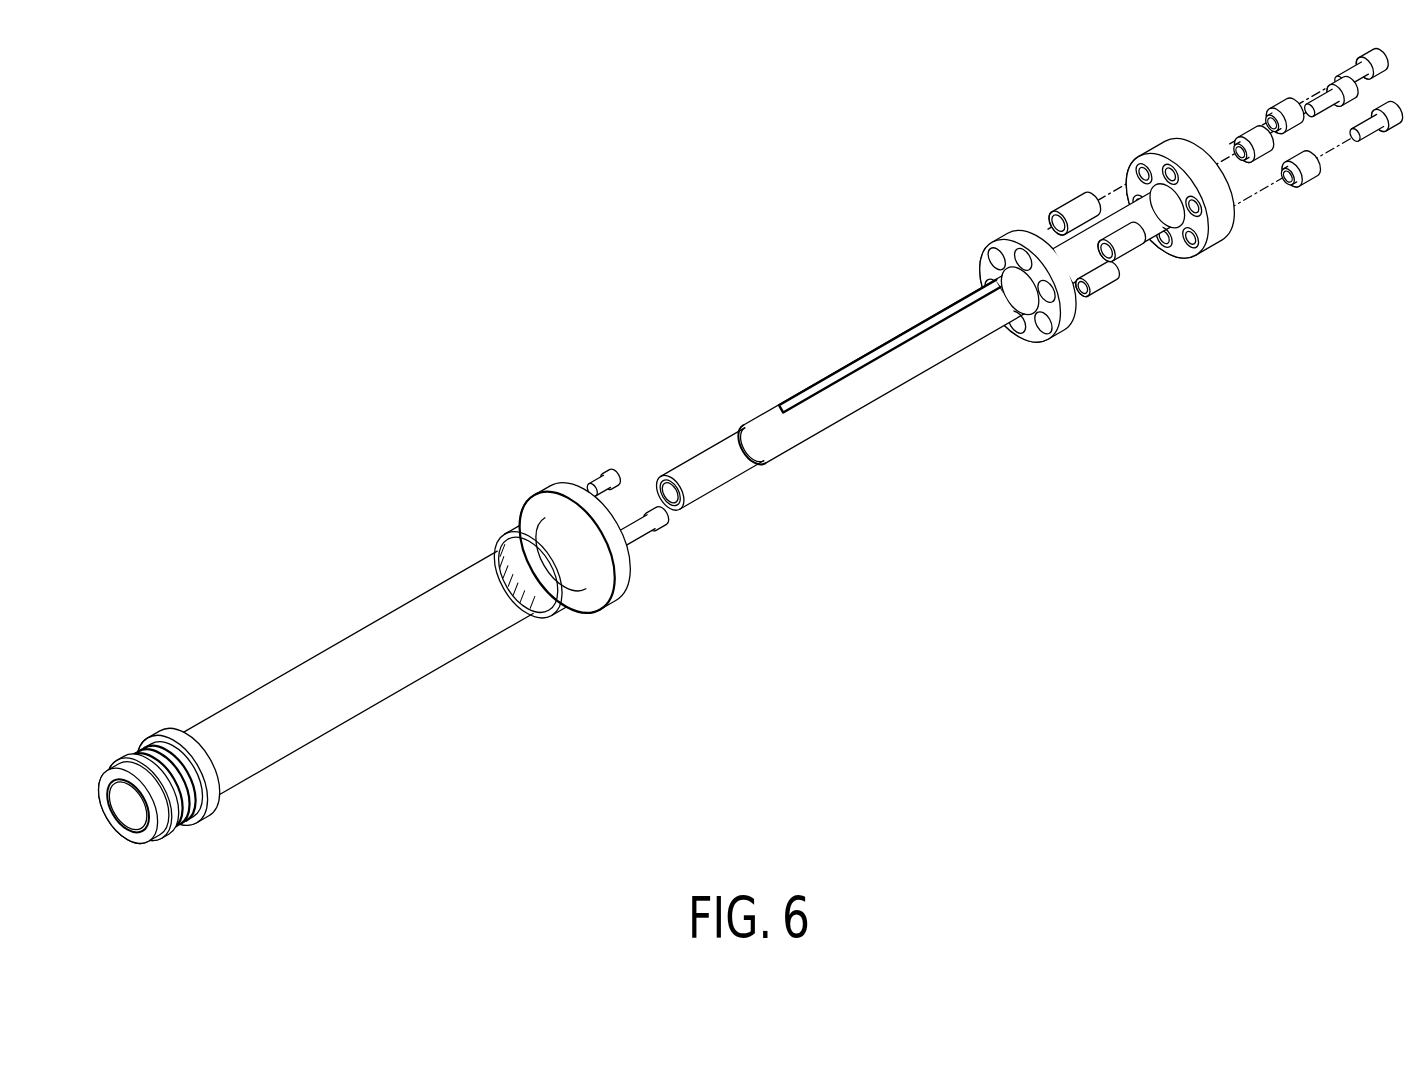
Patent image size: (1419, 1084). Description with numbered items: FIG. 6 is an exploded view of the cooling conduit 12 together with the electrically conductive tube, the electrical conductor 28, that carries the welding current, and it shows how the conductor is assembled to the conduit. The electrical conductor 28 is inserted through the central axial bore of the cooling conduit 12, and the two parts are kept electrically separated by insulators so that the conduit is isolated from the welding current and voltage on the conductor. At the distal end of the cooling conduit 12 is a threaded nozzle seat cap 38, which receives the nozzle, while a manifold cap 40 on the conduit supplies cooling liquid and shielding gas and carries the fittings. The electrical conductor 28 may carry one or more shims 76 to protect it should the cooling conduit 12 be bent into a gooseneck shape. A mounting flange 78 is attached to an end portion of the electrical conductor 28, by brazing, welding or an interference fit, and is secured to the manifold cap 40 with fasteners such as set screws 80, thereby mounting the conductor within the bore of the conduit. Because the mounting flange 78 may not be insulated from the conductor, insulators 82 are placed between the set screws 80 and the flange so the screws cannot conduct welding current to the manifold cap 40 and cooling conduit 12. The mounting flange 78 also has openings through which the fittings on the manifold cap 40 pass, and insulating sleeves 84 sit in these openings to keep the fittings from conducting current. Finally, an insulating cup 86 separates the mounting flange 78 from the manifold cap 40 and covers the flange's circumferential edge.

The cooling conduit 12 is at (328, 734).
The electrical conductor 28 is at (730, 483).
The threaded nozzle seat cap 38 is at (173, 830).
The manifold cap 40 is at (613, 597).
The shim 76 is at (860, 353).
The mounting flange 78 is at (1212, 255).
The set screws 80 is at (1367, 140).
The insulators 82 is at (1307, 190).
The insulating sleeves 84 is at (1107, 287).
The insulating cup 86 is at (1067, 333).